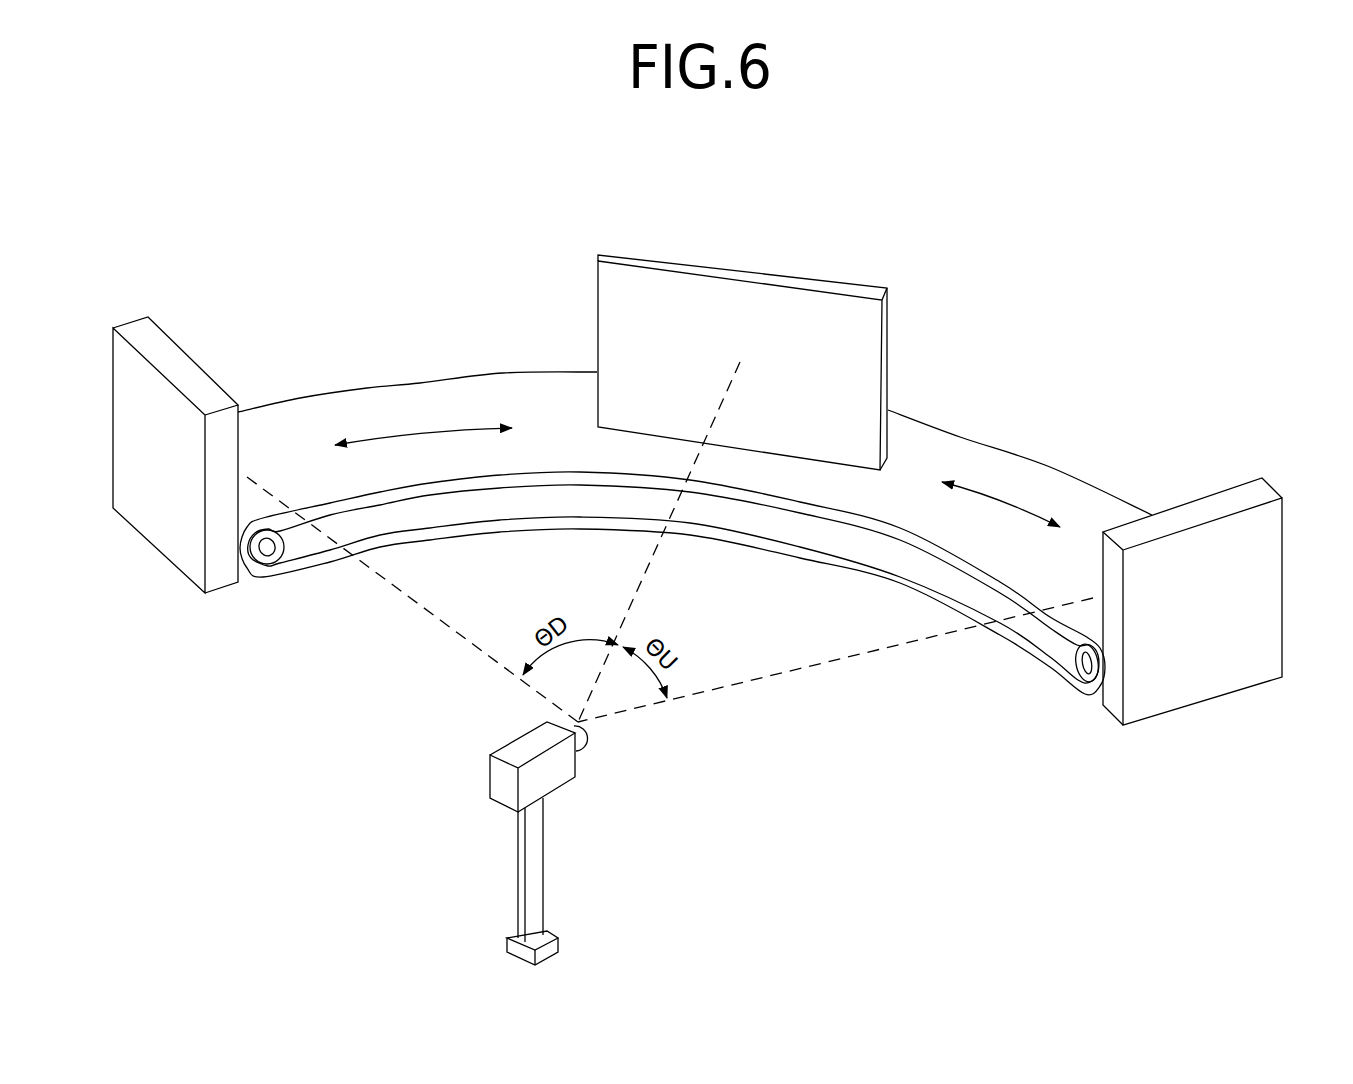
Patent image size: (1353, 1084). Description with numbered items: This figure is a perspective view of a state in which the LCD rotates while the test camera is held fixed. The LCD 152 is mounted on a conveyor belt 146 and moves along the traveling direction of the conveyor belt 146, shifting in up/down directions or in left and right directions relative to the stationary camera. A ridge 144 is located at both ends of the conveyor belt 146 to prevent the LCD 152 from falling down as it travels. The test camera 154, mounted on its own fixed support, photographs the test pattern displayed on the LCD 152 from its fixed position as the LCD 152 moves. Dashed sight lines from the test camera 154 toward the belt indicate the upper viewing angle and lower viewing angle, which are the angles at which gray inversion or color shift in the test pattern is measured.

The ridge 144 is at (168, 353).
The conveyor belt 146 is at (398, 393).
The LCD 152 is at (867, 330).
The test camera 154 is at (495, 780).